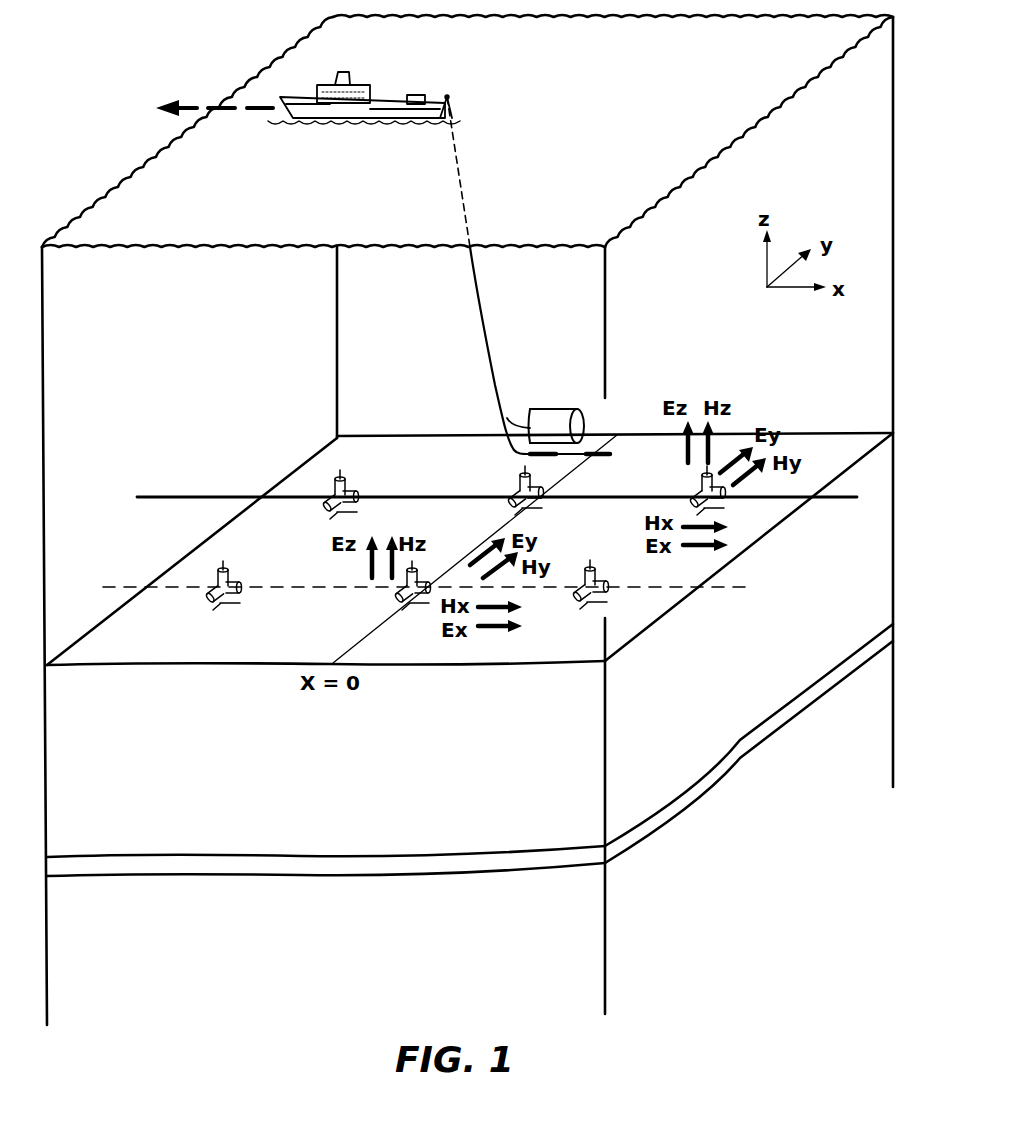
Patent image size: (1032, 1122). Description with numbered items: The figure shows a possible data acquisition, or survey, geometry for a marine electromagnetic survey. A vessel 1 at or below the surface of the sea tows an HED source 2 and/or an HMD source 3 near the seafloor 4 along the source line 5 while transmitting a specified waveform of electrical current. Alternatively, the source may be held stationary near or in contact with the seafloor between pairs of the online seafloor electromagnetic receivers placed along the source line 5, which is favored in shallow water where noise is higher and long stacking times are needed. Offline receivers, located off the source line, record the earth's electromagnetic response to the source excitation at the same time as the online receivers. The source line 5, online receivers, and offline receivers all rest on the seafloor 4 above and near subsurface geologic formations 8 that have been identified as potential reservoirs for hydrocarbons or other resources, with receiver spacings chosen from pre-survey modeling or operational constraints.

The vessel 1 is at (364, 86).
The HED source 2 is at (592, 452).
The HMD source 3 is at (546, 409).
The seafloor 4 is at (105, 617).
The source line 5 is at (163, 497).
The subsurface geologic formations 8 is at (130, 866).